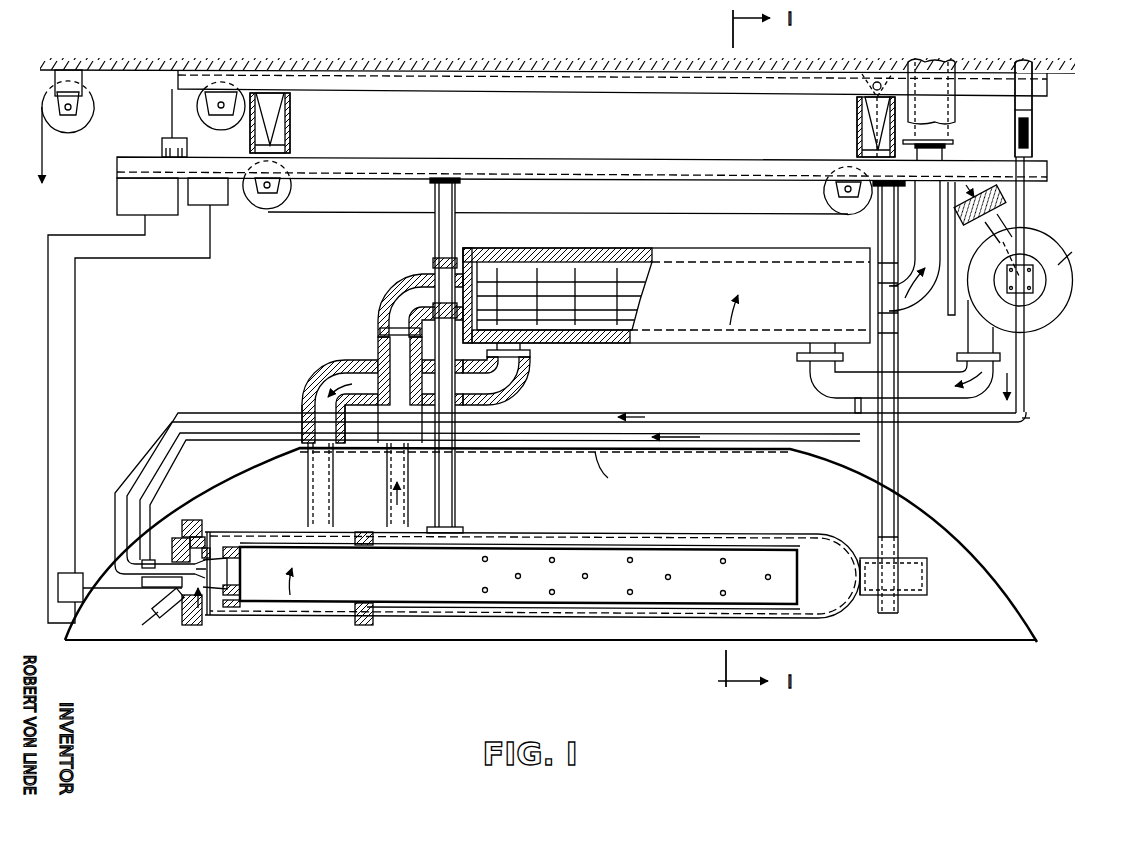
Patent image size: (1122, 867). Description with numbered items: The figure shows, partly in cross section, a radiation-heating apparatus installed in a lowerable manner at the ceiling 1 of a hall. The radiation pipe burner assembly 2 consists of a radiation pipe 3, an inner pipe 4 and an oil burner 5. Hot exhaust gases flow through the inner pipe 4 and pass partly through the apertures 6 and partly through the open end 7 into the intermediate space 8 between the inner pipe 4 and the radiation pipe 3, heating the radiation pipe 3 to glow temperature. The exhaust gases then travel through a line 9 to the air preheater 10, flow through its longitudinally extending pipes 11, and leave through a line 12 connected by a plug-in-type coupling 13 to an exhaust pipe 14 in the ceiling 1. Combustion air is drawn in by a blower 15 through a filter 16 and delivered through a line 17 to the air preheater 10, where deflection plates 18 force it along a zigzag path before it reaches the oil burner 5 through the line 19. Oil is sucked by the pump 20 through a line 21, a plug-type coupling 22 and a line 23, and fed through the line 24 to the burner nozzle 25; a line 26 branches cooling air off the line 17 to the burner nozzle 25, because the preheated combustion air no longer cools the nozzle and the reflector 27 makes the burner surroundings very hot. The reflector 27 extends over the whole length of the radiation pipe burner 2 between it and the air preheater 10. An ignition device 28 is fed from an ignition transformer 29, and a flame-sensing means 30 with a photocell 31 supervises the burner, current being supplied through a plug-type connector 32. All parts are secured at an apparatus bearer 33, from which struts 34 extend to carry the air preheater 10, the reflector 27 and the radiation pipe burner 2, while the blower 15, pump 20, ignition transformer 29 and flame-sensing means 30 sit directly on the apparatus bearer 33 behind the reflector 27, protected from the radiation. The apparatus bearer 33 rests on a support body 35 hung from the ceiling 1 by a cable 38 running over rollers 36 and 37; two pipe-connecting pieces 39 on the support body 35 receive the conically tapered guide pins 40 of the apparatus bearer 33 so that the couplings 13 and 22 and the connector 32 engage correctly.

The ceiling 1 is at (288, 66).
The radiation pipe burner assembly 2 is at (290, 597).
The radiation pipe 3 is at (416, 617).
The inner pipe 4 is at (455, 612).
The oil burner 5 is at (196, 615).
The apertures 6 is at (550, 596).
The open end 7 is at (798, 590).
The intermediate space 8 is at (592, 612).
The line 9 is at (384, 290).
The air preheater 10 is at (730, 325).
The longitudinally extending pipes 11 is at (560, 300).
The line 12 is at (912, 312).
The plug-in-type coupling 13 is at (955, 143).
The exhaust pipe 14 is at (926, 62).
The blower 15 is at (1036, 330).
The filter 16 is at (1000, 204).
The line 17 is at (985, 402).
The deflection plates 18 is at (610, 343).
The line 19 is at (526, 376).
The pump 20 is at (1065, 300).
The line 21 is at (1026, 225).
The plug-type coupling 22 is at (1033, 130).
The line 23 is at (1023, 62).
The line 24 is at (125, 483).
The burner nozzle 25 is at (204, 537).
The line 26 is at (150, 477).
The reflector 27 is at (560, 452).
The ignition device 28 is at (150, 620).
The ignition transformer 29 is at (157, 210).
The flame-sensing means 30 is at (222, 205).
The photocell 31 is at (76, 573).
The plug-type connector 32 is at (168, 138).
The apparatus bearer 33 is at (534, 160).
The struts 34 is at (456, 475).
The support body 35 is at (452, 85).
The rollers 36 is at (272, 206).
The rollers 37 is at (78, 122).
The cable 38 is at (44, 150).
The pipe-connecting pieces 39 is at (291, 104).
The guide pins 40 is at (276, 128).